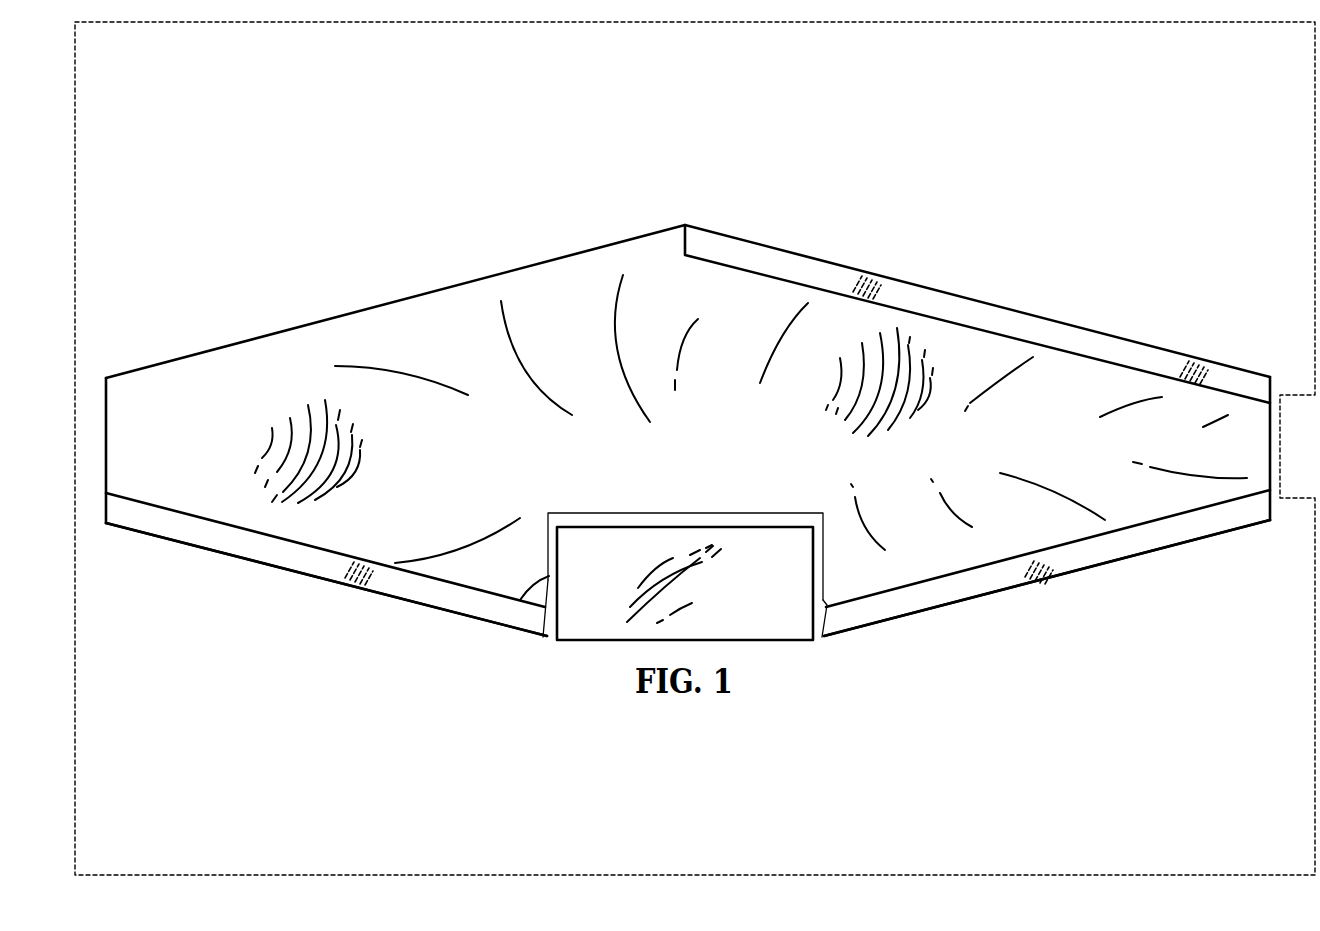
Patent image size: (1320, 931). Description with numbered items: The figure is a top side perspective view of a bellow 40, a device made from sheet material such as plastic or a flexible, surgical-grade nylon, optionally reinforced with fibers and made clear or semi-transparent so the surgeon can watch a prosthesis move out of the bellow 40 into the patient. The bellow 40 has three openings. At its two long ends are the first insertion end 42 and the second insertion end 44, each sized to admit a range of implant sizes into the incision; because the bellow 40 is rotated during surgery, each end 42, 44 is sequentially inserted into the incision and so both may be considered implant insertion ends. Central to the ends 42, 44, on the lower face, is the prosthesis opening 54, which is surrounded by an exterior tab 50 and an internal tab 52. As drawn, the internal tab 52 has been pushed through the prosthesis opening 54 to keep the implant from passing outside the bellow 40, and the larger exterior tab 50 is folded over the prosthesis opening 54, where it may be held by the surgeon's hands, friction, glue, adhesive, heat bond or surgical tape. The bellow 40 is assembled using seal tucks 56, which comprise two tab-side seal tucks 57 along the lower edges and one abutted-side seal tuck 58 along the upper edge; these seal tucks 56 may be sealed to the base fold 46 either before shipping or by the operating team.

The bellow 40 is at (370, 222).
The first insertion end 42 is at (1284, 380).
The second insertion end 44 is at (90, 392).
The base fold 46 is at (558, 464).
The exterior tab 50 is at (762, 536).
The internal tab 52 is at (641, 524).
The prosthesis opening 54 is at (829, 654).
The seal tucks 56 is at (416, 604).
The tab-side seal tucks 57 is at (289, 560).
The abutted-side seal tuck 58 is at (1142, 353).